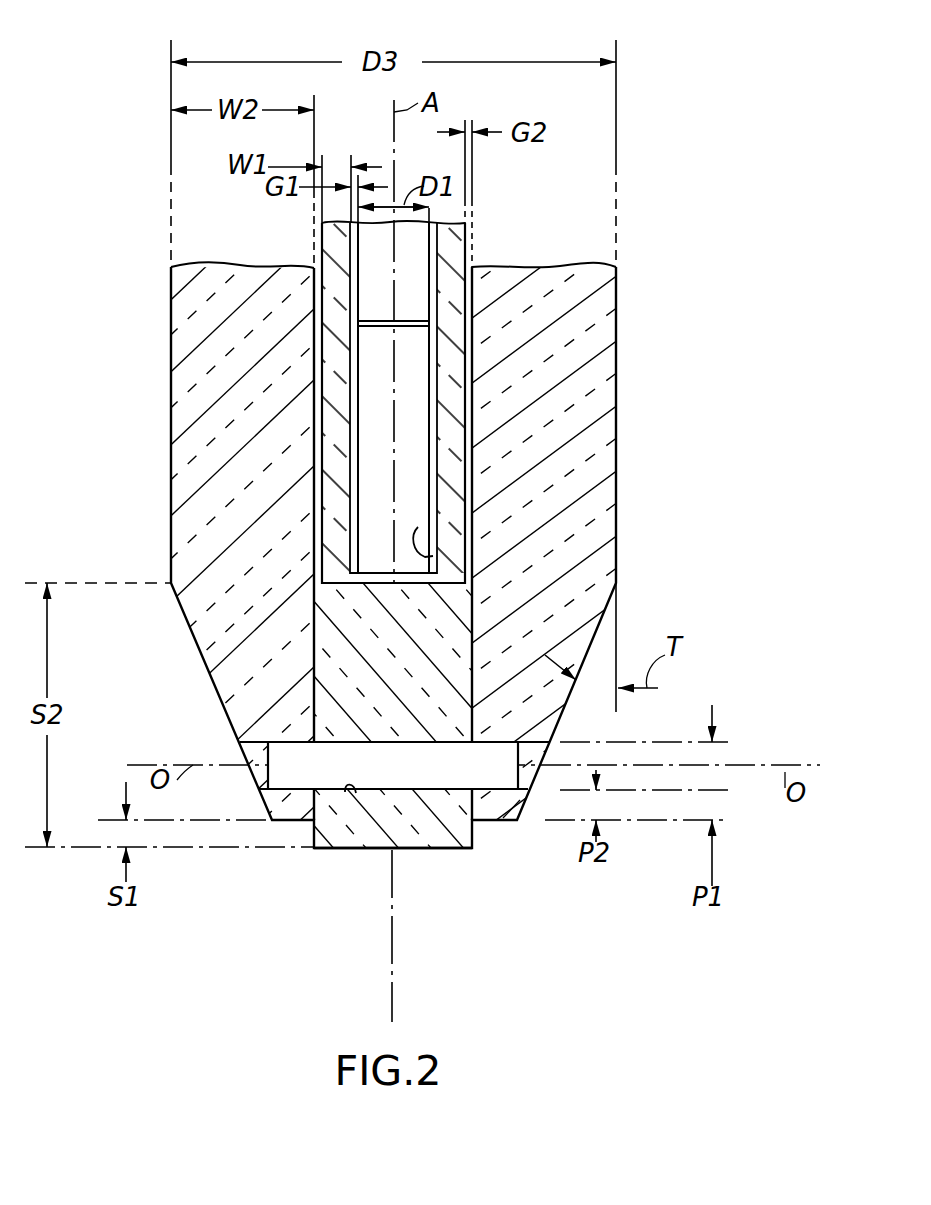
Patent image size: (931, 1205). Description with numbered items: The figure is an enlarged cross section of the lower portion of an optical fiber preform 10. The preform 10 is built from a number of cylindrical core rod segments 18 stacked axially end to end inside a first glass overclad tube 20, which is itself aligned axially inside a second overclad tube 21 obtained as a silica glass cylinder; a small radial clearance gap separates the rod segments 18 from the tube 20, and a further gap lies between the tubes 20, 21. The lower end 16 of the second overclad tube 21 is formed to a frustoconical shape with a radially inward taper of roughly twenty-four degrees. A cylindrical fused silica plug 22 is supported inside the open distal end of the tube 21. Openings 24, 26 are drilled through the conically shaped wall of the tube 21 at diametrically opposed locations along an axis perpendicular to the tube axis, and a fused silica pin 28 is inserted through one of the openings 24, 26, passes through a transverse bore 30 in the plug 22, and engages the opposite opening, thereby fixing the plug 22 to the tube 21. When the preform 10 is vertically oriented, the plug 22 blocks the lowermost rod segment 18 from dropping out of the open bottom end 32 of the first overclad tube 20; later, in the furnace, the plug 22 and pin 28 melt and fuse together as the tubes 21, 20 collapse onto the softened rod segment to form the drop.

The optical fiber preform 10 is at (622, 437).
The lower end of the second overclad tube 16 is at (196, 647).
The core rod segments 18 is at (408, 248).
The first glass overclad tube 20 is at (455, 250).
The second overclad tube 21 is at (616, 310).
The plug 22 is at (448, 850).
The opening 24 is at (256, 746).
The opening 26 is at (530, 745).
The pin 28 is at (292, 776).
The transverse bore 30 is at (356, 793).
The open bottom end of the first overclad tube 32 is at (418, 529).